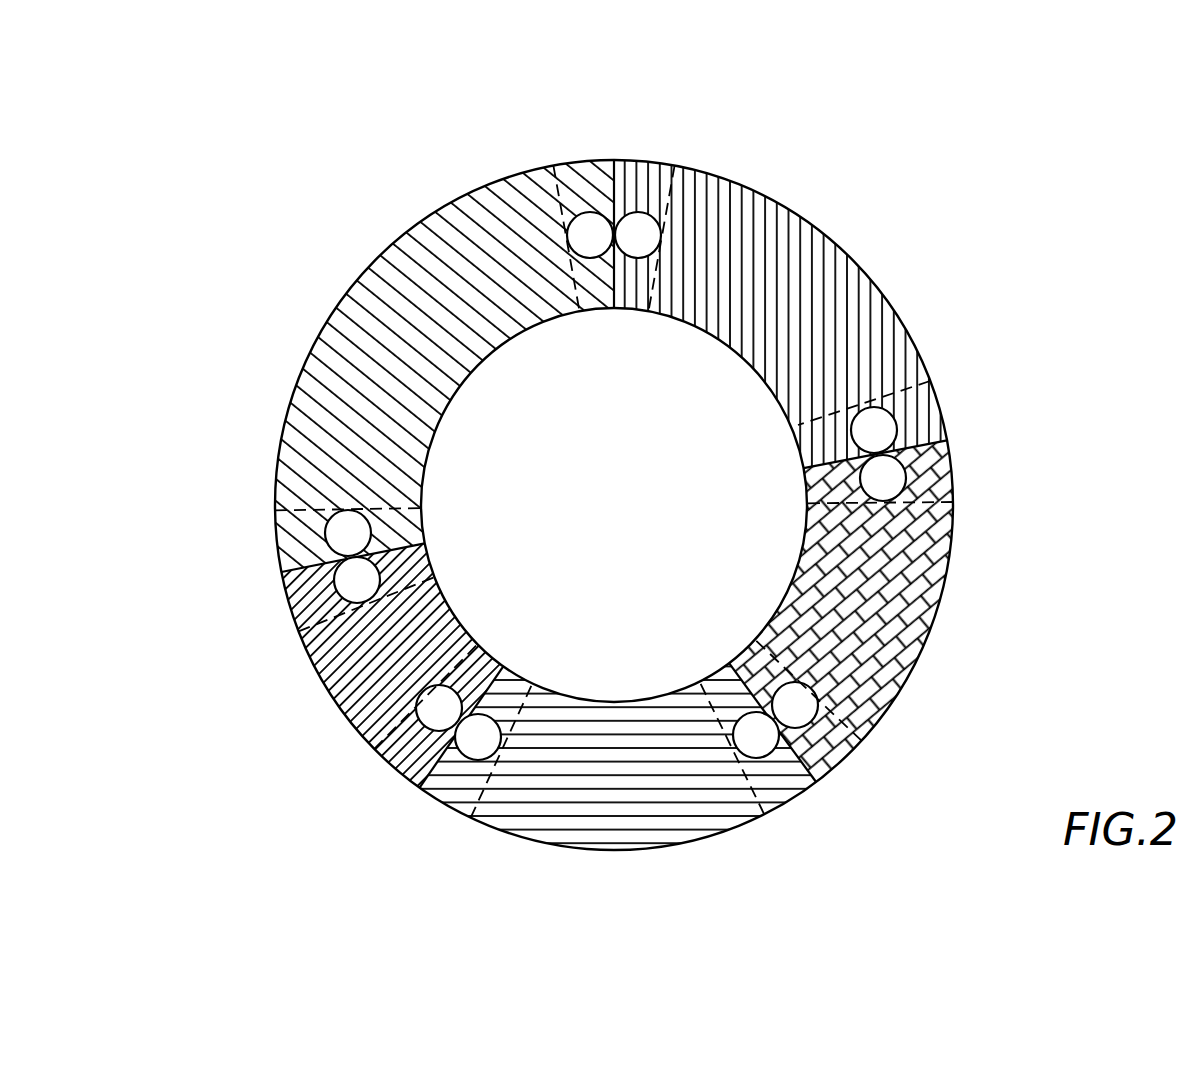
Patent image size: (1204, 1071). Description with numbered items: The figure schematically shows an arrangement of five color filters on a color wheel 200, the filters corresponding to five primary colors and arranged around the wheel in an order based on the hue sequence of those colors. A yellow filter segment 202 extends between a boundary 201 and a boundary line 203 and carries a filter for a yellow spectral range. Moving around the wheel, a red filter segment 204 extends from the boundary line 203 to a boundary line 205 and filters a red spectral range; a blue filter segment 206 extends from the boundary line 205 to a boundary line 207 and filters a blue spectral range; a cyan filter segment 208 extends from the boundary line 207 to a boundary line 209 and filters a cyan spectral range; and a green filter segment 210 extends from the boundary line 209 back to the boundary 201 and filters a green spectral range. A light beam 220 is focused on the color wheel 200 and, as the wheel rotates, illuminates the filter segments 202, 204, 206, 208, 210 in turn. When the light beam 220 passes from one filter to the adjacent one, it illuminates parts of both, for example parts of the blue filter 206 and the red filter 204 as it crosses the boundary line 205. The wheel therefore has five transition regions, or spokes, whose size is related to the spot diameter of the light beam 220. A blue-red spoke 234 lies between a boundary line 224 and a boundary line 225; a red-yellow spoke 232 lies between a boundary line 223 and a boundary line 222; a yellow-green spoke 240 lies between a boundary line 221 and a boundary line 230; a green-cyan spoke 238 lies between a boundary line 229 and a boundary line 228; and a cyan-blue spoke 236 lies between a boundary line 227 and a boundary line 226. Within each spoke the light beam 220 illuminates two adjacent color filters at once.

The color wheel 200 is at (1056, 186).
The boundary 201 is at (280, 556).
The yellow filter segment 202 is at (348, 293).
The boundary line 203 is at (600, 160).
The red filter segment 204 is at (832, 235).
The boundary line 205 is at (956, 463).
The blue filter segment 206 is at (929, 638).
The boundary line 207 is at (829, 768).
The cyan filter segment 208 is at (608, 852).
The boundary line 209 is at (419, 790).
The green filter segment 210 is at (333, 703).
The light beam 220 is at (878, 403).
The boundary line 221 is at (276, 494).
The boundary line 222 is at (552, 214).
The boundary line 223 is at (665, 213).
The boundary line 224 is at (914, 378).
The boundary line 225 is at (956, 523).
The boundary line 226 is at (874, 728).
The boundary line 227 is at (767, 800).
The boundary line 228 is at (470, 808).
The boundary line 229 is at (362, 738).
The boundary line 230 is at (317, 622).
The red-yellow spoke 232 is at (622, 144).
The blue-red spoke 234 is at (966, 437).
The cyan-blue spoke 236 is at (827, 801).
The green-cyan spoke 238 is at (395, 796).
The yellow-green spoke 240 is at (262, 585).